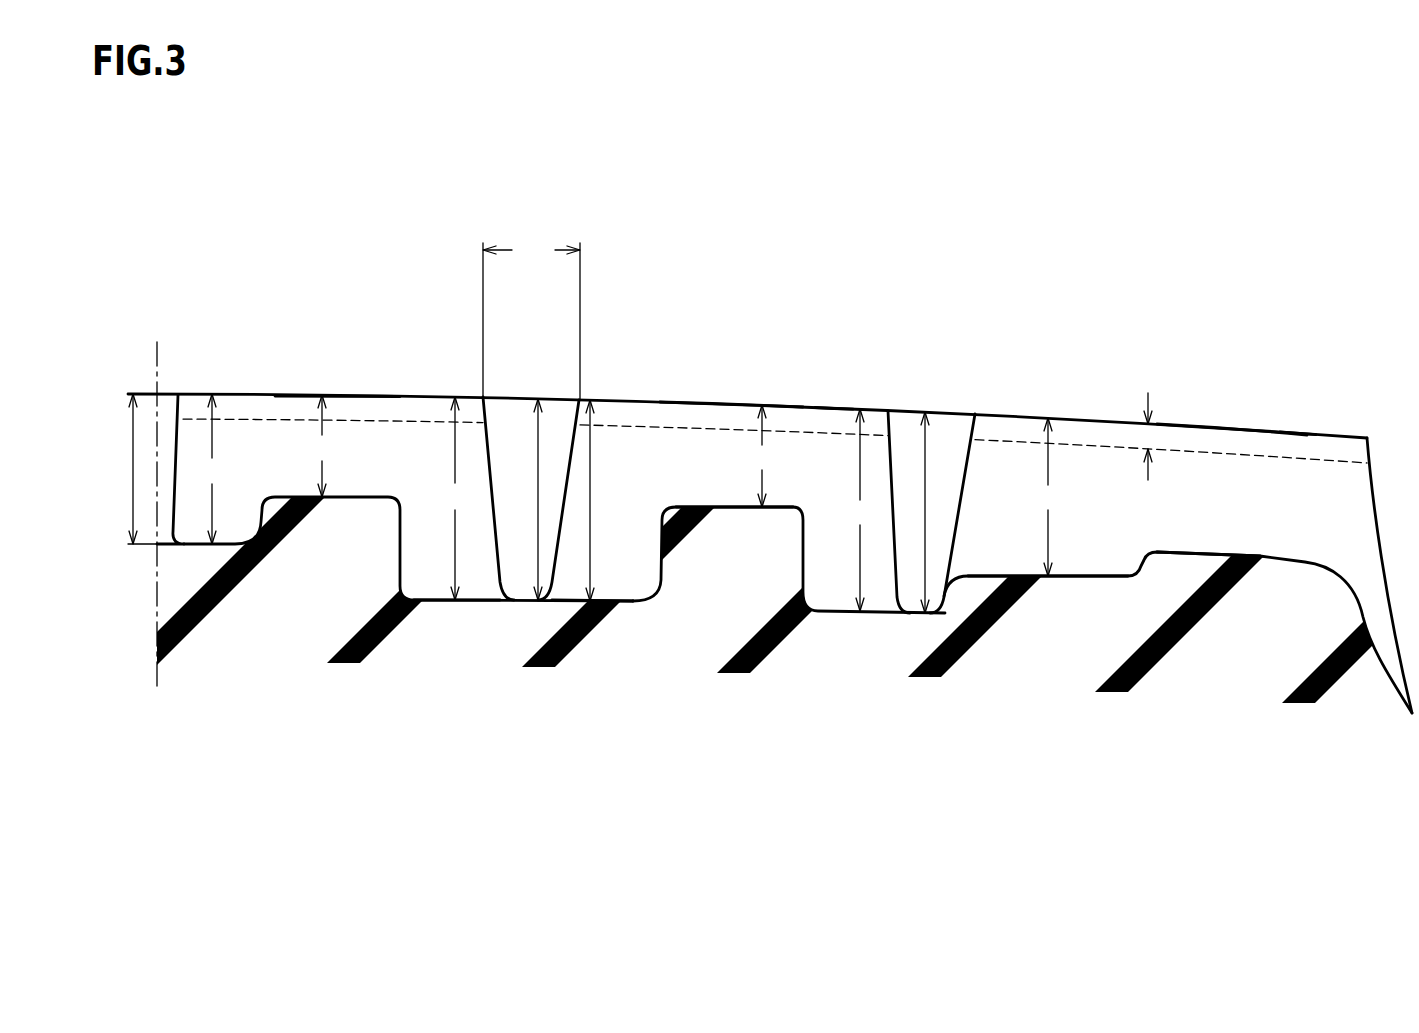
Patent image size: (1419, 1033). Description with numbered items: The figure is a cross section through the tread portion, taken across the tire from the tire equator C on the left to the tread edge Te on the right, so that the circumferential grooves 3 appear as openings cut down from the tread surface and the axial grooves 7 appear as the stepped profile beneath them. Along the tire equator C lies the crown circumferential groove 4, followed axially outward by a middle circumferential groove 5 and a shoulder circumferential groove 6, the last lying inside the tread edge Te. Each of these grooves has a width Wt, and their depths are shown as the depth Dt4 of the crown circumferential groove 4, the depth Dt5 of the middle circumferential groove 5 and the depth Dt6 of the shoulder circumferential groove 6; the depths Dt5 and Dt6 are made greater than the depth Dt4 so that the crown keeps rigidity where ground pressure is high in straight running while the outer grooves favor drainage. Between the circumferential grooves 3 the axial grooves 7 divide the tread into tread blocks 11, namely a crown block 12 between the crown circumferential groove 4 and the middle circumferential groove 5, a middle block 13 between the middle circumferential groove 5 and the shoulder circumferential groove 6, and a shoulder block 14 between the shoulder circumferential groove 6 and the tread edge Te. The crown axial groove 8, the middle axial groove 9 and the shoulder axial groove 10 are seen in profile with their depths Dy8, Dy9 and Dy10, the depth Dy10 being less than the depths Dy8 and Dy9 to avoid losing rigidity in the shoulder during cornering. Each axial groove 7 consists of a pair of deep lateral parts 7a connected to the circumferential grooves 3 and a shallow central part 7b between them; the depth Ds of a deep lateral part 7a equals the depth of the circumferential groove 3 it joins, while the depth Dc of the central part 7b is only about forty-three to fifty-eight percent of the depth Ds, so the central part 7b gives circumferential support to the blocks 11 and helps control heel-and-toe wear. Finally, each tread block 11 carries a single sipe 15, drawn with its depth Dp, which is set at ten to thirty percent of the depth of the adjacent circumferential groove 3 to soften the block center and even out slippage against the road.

The circumferential groove 3 is at (566, 427).
The crown circumferential groove 4 is at (168, 403).
The middle circumferential groove 5 is at (517, 418).
The shoulder circumferential groove 6 is at (906, 430).
The axial groove 7 is at (798, 487).
The crown axial groove 8 is at (275, 447).
The middle axial groove 9 is at (686, 462).
The shoulder axial groove 10 is at (1090, 473).
The tread block 11 is at (747, 353).
The crown block 12 is at (366, 389).
The middle block 13 is at (793, 397).
The shoulder block 14 is at (1188, 421).
The sipe 15 is at (832, 430).
The deep lateral part 7a is at (432, 447).
The shallow central part 7b is at (727, 457).
The tire equator C is at (156, 501).
The tread edge Te is at (1368, 437).
The depth of the crown circumferential groove Dt4 is at (133, 467).
The depth of the middle circumferential groove Dt5 is at (536, 495).
The depth of the shoulder circumferential groove Dt6 is at (927, 505).
The depth of the deep lateral part Ds is at (533, 502).
The depth of the central part Dc is at (540, 451).
The depth of the crown axial groove Dy8 is at (455, 498).
The depth of the middle axial groove Dy9 is at (593, 505).
The depth of the shoulder axial groove Dy10 is at (1050, 497).
The depth of the sipe Dp is at (1129, 432).
The width of the circumferential groove Wt is at (531, 317).